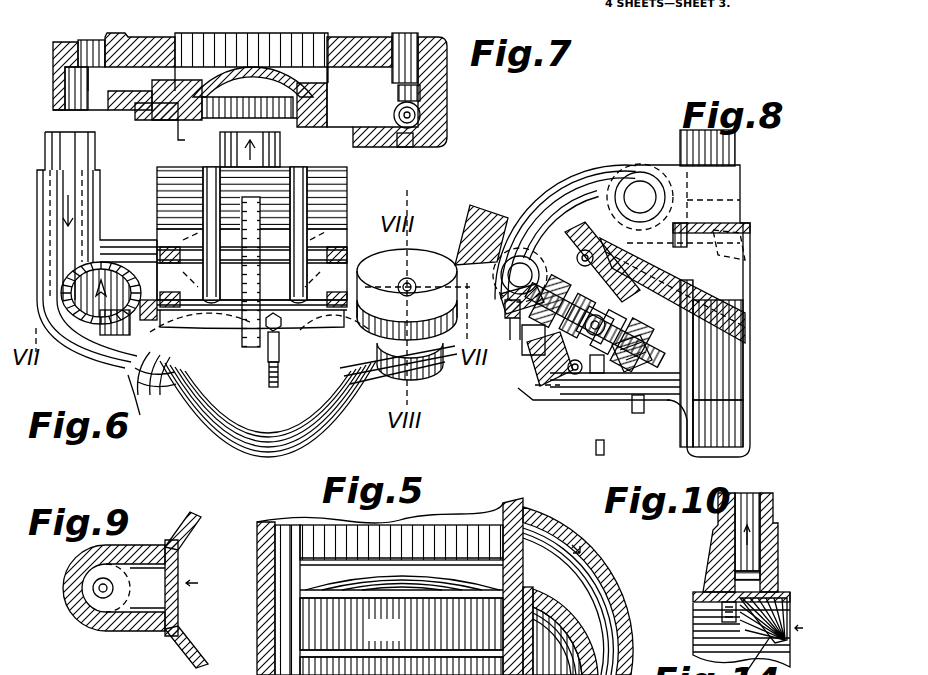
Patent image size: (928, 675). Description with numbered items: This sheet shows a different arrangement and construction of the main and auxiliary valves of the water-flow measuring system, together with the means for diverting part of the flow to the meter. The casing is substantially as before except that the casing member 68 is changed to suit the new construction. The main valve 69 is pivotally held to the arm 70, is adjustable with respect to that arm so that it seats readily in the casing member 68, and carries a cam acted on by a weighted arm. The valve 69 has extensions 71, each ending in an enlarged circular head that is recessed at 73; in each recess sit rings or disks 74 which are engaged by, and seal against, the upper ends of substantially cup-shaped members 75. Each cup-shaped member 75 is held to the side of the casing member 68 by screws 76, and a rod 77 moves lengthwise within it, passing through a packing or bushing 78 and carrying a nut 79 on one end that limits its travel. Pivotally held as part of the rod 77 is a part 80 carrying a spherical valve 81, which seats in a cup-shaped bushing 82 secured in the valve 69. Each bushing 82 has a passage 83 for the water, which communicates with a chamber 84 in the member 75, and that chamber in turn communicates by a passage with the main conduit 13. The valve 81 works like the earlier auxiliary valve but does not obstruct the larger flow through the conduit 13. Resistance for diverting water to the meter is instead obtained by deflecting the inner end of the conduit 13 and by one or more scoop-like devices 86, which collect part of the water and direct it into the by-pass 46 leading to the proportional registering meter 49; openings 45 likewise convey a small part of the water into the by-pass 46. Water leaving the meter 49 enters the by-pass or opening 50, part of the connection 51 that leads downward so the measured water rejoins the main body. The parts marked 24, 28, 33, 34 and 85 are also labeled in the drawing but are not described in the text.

In FIG. 7, the conduit 13 is at (243, 44).
In FIG. 10, the conduit 13 is at (720, 642).
In FIG. 8, the rack 24 is at (476, 220).
In FIG. 8, the bore 28 is at (641, 188).
In FIG. 6, the screw 33 is at (281, 352).
In FIG. 6, the rod 34 is at (242, 338).
In FIG. 8, the openings 45 is at (730, 226).
In FIG. 10, the openings 45 is at (722, 594).
In FIG. 6, the by-pass 46 is at (232, 140).
In FIG. 8, the by-pass 46 is at (715, 140).
In FIG. 10, the by-pass 46 is at (742, 556).
In FIG. 5, the proportional registering meter 49 is at (401, 600).
In FIG. 5, the by-pass or opening 50 is at (522, 501).
In FIG. 8, the connection 51 is at (724, 407).
In FIG. 8, the casing member 68 is at (682, 430).
In FIG. 9, the casing member 68 is at (200, 637).
In FIG. 10, the casing member 68 is at (716, 606).
In FIG. 6, the valve 69 is at (380, 255).
In FIG. 8, the valve 69 is at (533, 338).
In FIG. 6, the arm 70 is at (190, 167).
In FIG. 8, the arm 70 is at (563, 180).
In FIG. 7, the extensions 71 is at (352, 128).
In FIG. 6, the extensions 71 is at (360, 407).
In FIG. 8, the recess 73 is at (571, 257).
In FIG. 8, the rings or disks 74 is at (573, 205).
In FIG. 6, the cup-shaped member 75 is at (133, 398).
In FIG. 8, the cup-shaped member 75 is at (597, 373).
In FIG. 9, the cup-shaped member 75 is at (121, 628).
In FIG. 8, the screws 76 is at (538, 394).
In FIG. 7, the rod 77 is at (405, 37).
In FIG. 8, the rod 77 is at (643, 413).
In FIG. 7, the packing or bushing 78 is at (418, 40).
In FIG. 8, the packing or bushing 78 is at (620, 378).
In FIG. 8, the nut 79 is at (695, 352).
In FIG. 8, the part 80 is at (575, 376).
In FIG. 7, the valve 81 is at (420, 113).
In FIG. 8, the valve 81 is at (520, 372).
In FIG. 8, the cup-shaped bushing 82 is at (527, 250).
In FIG. 7, the passage 83 is at (406, 147).
In FIG. 8, the passage 83 is at (512, 256).
In FIG. 7, the chamber 84 is at (440, 88).
In FIG. 8, the chamber 84 is at (600, 458).
In FIG. 7, the sleeve 85 is at (133, 78).
In FIG. 9, the sleeve 85 is at (150, 580).
In FIG. 8, the device 86 is at (728, 231).